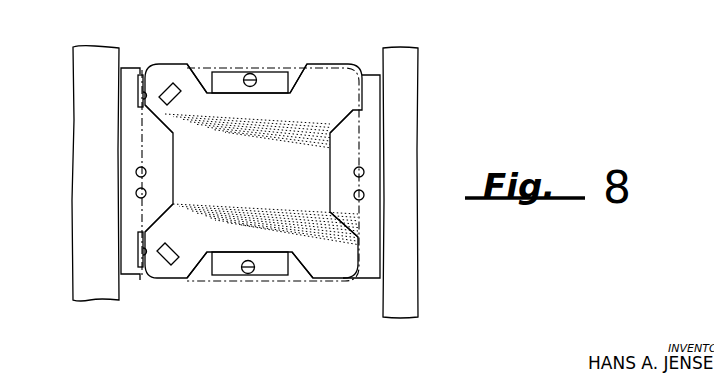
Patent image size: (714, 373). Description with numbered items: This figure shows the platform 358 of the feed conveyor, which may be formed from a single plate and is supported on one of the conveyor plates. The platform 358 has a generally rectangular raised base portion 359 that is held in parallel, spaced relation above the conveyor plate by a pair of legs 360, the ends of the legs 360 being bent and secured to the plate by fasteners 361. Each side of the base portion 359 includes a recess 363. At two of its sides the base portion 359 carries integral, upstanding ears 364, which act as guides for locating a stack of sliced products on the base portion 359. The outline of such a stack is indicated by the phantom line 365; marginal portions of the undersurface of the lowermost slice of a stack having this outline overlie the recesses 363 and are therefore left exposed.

The platform 358 is at (324, 242).
The raised base portion 359 is at (271, 195).
The legs 360 is at (221, 77).
The fasteners 361 is at (252, 72).
The recess 363 is at (276, 78).
The upstanding ears 364 is at (143, 94).
The phantom line 365 is at (143, 208).